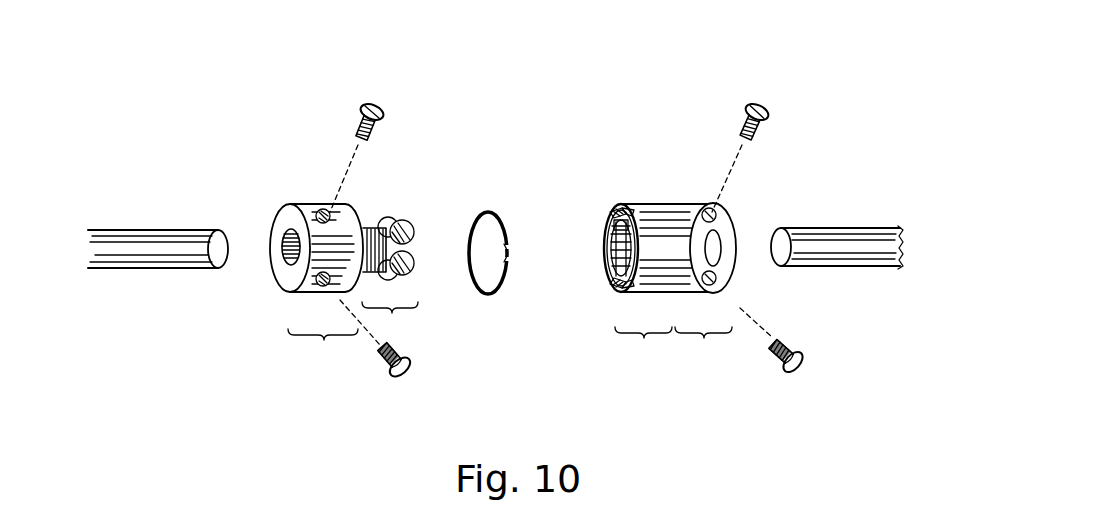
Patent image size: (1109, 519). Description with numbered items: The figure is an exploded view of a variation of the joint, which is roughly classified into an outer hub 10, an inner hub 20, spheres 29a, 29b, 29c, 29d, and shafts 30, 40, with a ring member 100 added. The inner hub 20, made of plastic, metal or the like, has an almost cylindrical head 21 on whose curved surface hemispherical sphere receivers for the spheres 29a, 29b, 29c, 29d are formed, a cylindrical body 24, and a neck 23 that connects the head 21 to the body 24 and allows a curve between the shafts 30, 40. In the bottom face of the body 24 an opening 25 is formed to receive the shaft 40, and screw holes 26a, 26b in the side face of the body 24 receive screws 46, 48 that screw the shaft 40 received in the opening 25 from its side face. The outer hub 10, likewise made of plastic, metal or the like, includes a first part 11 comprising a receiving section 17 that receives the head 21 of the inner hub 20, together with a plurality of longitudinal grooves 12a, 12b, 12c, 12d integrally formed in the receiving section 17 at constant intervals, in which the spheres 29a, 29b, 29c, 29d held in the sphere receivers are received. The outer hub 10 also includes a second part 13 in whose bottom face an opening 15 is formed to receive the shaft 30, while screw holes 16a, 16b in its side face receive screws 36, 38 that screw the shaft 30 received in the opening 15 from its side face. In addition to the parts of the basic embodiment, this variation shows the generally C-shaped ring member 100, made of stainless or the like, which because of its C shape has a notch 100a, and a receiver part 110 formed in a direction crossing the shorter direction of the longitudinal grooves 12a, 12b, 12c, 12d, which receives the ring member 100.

The outer hub 10 is at (666, 256).
The first part 11 is at (612, 258).
The longitudinal groove 12a is at (613, 208).
The longitudinal groove 12b is at (622, 206).
The longitudinal groove 12c is at (628, 292).
The longitudinal groove 12d is at (612, 284).
The second part 13 is at (727, 264).
The opening 15 is at (736, 262).
The screw hole 16a is at (714, 212).
The screw hole 16b is at (709, 286).
The receiving section 17 is at (610, 253).
The inner hub 20 is at (314, 258).
The head 21 is at (414, 258).
The neck 23 is at (374, 277).
The body 24 is at (323, 344).
The opening 25 is at (286, 258).
The screw hole 26a is at (330, 213).
The screw hole 26b is at (324, 286).
The sphere 29a is at (388, 218).
The sphere 29b is at (408, 221).
The sphere 29c is at (414, 270).
The sphere 29d is at (394, 276).
The shaft 30 is at (830, 266).
The screw 36 is at (793, 372).
The screw 38 is at (756, 102).
The shaft 40 is at (138, 268).
The screw 46 is at (400, 376).
The screw 48 is at (370, 102).
The ring member 100 is at (511, 238).
The notch 100a is at (509, 252).
The receiver part 110 is at (586, 222).